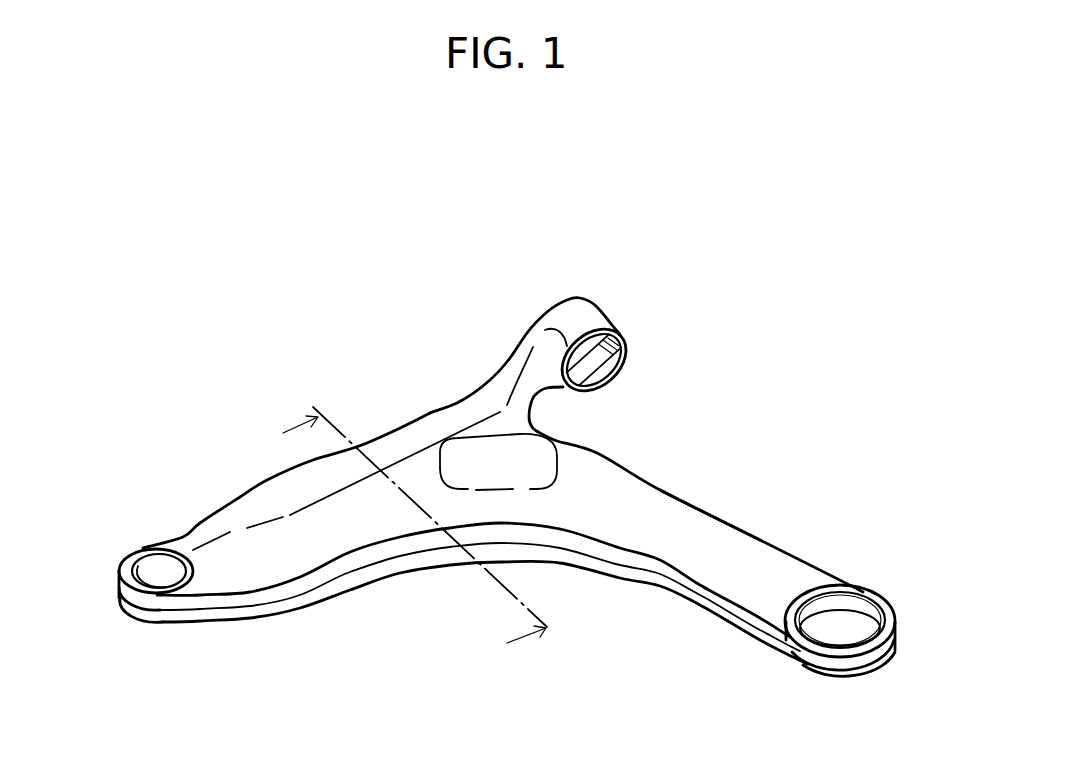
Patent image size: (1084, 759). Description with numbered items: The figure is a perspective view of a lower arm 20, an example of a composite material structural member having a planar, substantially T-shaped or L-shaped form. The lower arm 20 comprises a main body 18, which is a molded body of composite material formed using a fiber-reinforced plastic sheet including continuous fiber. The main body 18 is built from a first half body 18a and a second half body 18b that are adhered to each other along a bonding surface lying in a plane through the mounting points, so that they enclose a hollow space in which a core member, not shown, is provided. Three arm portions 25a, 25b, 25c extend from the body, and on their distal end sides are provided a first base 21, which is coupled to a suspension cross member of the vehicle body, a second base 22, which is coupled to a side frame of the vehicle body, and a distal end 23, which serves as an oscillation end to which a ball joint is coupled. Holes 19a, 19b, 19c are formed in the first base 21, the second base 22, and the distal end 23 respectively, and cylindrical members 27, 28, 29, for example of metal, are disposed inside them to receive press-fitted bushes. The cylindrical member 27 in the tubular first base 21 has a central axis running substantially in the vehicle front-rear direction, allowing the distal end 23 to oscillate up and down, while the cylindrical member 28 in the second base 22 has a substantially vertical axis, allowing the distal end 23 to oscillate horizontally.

The main body 18 is at (443, 573).
The first half body 18a is at (697, 517).
The second half body 18b is at (527, 553).
The hole 19a is at (626, 346).
The hole 19b is at (810, 637).
The hole 19c is at (137, 567).
The lower arm 20 is at (688, 253).
The first base 21 is at (618, 320).
The second base 22 is at (893, 602).
The distal end 23 is at (152, 533).
The arm portion 25a is at (515, 335).
The arm portion 25b is at (793, 537).
The arm portion 25c is at (220, 630).
The cylindrical member 27 is at (627, 365).
The cylindrical member 28 is at (862, 590).
The cylindrical member 29 is at (143, 553).